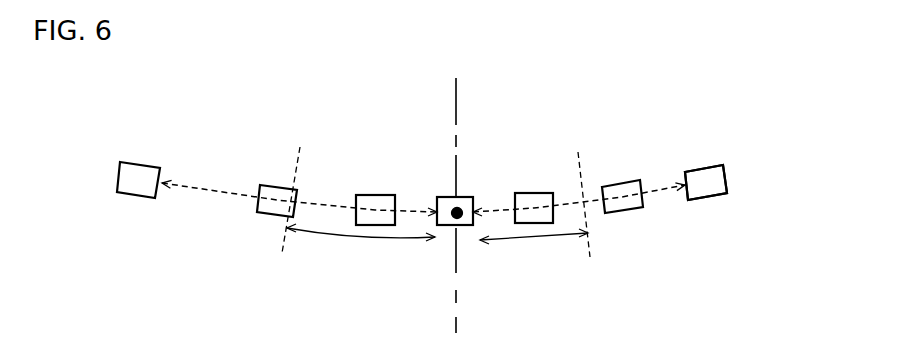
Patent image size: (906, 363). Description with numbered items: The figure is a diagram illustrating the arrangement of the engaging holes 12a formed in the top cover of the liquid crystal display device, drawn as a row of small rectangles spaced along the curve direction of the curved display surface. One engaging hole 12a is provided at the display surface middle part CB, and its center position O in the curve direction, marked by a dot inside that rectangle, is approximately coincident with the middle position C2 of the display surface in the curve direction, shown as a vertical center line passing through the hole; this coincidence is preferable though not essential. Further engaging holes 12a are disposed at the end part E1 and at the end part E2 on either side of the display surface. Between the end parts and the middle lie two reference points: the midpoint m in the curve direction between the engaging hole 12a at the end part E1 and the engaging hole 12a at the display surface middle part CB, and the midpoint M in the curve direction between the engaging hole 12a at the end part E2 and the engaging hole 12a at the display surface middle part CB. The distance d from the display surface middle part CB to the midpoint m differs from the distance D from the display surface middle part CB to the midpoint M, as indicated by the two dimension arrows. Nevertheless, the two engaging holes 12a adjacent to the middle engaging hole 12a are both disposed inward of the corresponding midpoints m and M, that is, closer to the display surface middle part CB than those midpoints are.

The engaging hole 12a is at (712, 185).
The end part E1 is at (704, 156).
The end part E2 is at (138, 155).
The midpoint M is at (284, 187).
The midpoint m is at (578, 190).
The display surface middle part CB is at (470, 184).
The middle position C2 is at (458, 92).
The center position O is at (455, 218).
The distance D is at (361, 248).
The distance d is at (534, 248).